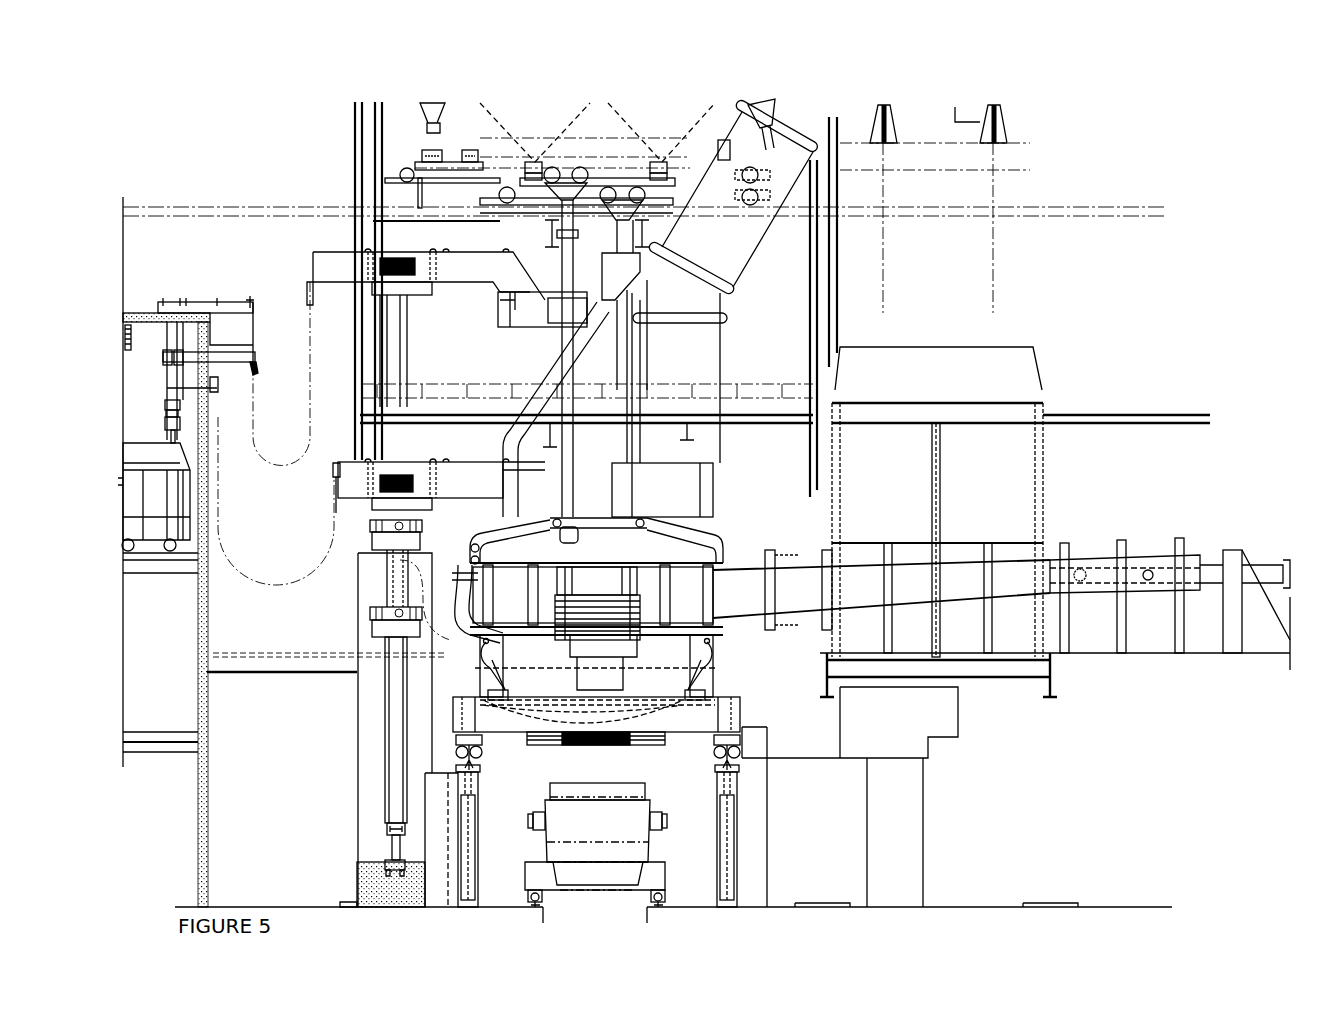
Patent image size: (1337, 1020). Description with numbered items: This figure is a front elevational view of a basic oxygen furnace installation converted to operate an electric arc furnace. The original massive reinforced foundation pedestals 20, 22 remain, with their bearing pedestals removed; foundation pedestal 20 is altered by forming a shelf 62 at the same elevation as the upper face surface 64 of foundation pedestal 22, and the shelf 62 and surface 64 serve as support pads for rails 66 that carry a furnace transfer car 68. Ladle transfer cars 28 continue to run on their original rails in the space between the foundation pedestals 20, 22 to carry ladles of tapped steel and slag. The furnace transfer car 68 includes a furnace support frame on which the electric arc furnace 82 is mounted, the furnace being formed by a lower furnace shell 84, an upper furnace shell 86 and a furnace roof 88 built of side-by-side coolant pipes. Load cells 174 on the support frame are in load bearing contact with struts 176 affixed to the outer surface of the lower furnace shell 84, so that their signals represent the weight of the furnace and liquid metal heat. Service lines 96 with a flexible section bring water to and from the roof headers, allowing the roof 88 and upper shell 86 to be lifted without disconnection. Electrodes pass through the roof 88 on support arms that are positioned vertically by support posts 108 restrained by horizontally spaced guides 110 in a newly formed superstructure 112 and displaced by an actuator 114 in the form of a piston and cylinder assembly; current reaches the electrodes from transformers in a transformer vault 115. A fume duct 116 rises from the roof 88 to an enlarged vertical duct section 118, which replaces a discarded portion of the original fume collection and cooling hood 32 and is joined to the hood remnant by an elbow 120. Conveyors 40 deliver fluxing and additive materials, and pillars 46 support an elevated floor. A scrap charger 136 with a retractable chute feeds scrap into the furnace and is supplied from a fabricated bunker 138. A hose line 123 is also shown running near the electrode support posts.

The transformer vault 115 is at (147, 313).
The fume collection and cooling hood 32 is at (724, 245).
The elbow 120 is at (715, 307).
The vertical duct section 118 is at (703, 365).
The bunker 138 is at (1043, 385).
The scrap charger 136 is at (1050, 567).
The pillars 46 is at (457, 482).
The conveyors 40 is at (607, 463).
The fume duct 116 is at (697, 497).
The electric arc furnace 82 is at (734, 533).
The furnace roof 88 is at (502, 542).
The service lines 96 is at (448, 571).
The upper furnace shell 86 is at (520, 605).
The guides 110 is at (367, 530).
The struts 176 is at (503, 660).
The load cells 174 is at (503, 693).
The furnace transfer car 68 is at (700, 718).
The shelf 62 is at (737, 772).
The rails 66 is at (473, 765).
The upper face surface 64 is at (450, 773).
The hose line 123 is at (447, 637).
The lower furnace shell 84 is at (468, 685).
The support posts 108 is at (383, 770).
The superstructure 112 is at (358, 797).
The actuator 114 is at (390, 835).
The foundation pedestal 22 is at (437, 837).
The transfer cars 28 is at (653, 873).
The foundation pedestal 20 is at (822, 832).